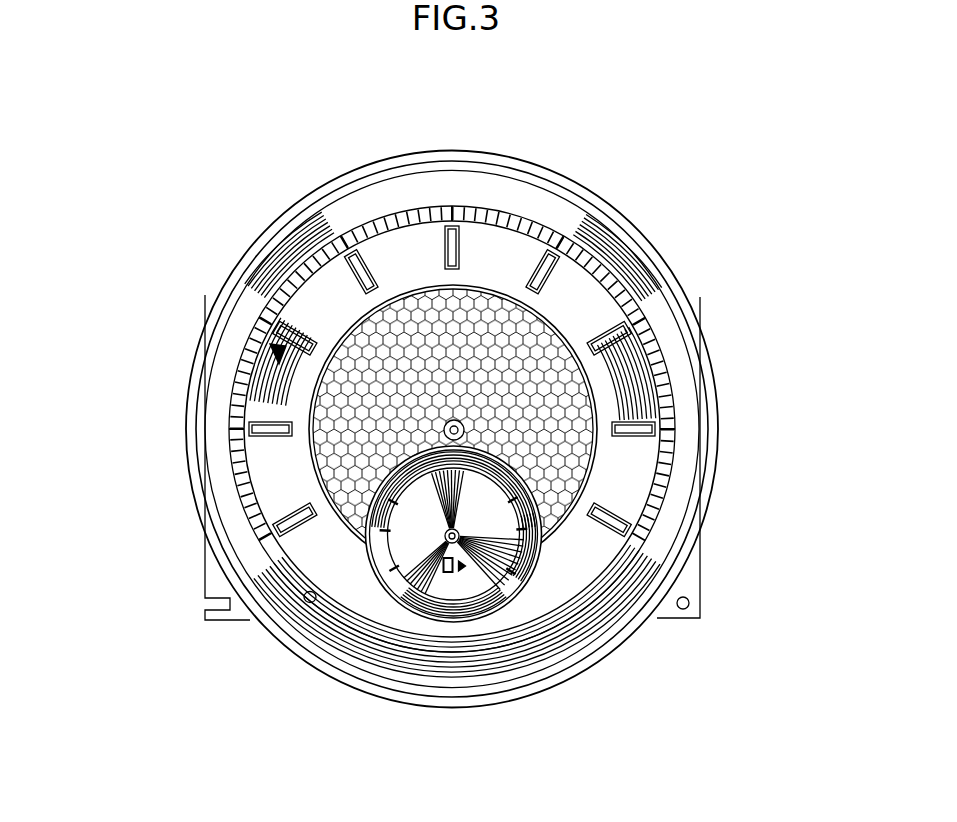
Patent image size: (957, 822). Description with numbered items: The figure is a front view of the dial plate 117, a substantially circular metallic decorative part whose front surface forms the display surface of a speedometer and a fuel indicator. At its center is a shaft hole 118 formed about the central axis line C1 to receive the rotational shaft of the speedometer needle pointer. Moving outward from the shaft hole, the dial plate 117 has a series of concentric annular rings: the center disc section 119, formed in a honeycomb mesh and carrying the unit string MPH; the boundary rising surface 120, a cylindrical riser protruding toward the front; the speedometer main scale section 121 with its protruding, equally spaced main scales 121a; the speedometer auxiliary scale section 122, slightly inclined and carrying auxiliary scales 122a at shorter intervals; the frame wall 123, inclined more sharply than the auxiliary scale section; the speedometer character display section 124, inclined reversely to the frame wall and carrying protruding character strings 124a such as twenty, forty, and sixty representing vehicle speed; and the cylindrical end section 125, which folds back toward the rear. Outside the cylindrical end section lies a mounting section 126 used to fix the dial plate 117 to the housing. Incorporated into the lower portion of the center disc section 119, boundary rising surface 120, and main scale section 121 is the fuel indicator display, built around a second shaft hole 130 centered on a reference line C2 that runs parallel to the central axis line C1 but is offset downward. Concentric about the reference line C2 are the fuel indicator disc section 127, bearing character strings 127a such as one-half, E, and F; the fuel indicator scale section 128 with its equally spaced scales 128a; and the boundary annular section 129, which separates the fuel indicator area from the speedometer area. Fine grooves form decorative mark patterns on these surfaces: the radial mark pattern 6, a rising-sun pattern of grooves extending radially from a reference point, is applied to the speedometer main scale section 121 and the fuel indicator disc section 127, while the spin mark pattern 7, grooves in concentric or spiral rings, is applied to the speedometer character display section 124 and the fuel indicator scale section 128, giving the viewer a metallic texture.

The dial plate 117 is at (278, 128).
The radial mark pattern 6 is at (275, 346).
The spin mark pattern 7 is at (528, 600).
The shaft hole 118 is at (446, 427).
The center disc section 119 is at (305, 488).
The boundary rising surface 120 is at (310, 537).
The speedometer main scale section 121 is at (305, 560).
The main scales 121a is at (462, 236).
The speedometer auxiliary scale section 122 is at (263, 598).
The auxiliary scales 122a is at (397, 216).
The frame wall 123 is at (281, 616).
The speedometer character display section 124 is at (337, 652).
The character strings 124a is at (207, 290).
The cylindrical end section 125 is at (355, 668).
The mounting section 126 is at (703, 296).
The fuel indicator disc section 127 is at (480, 592).
The character strings 127a is at (435, 598).
The fuel indicator scale section 128 is at (495, 585).
The scales 128a is at (408, 585).
The boundary annular section 129 is at (503, 613).
The shaft hole 130 is at (515, 545).
The central axis line C1 is at (460, 425).
The reference line C2 is at (460, 536).